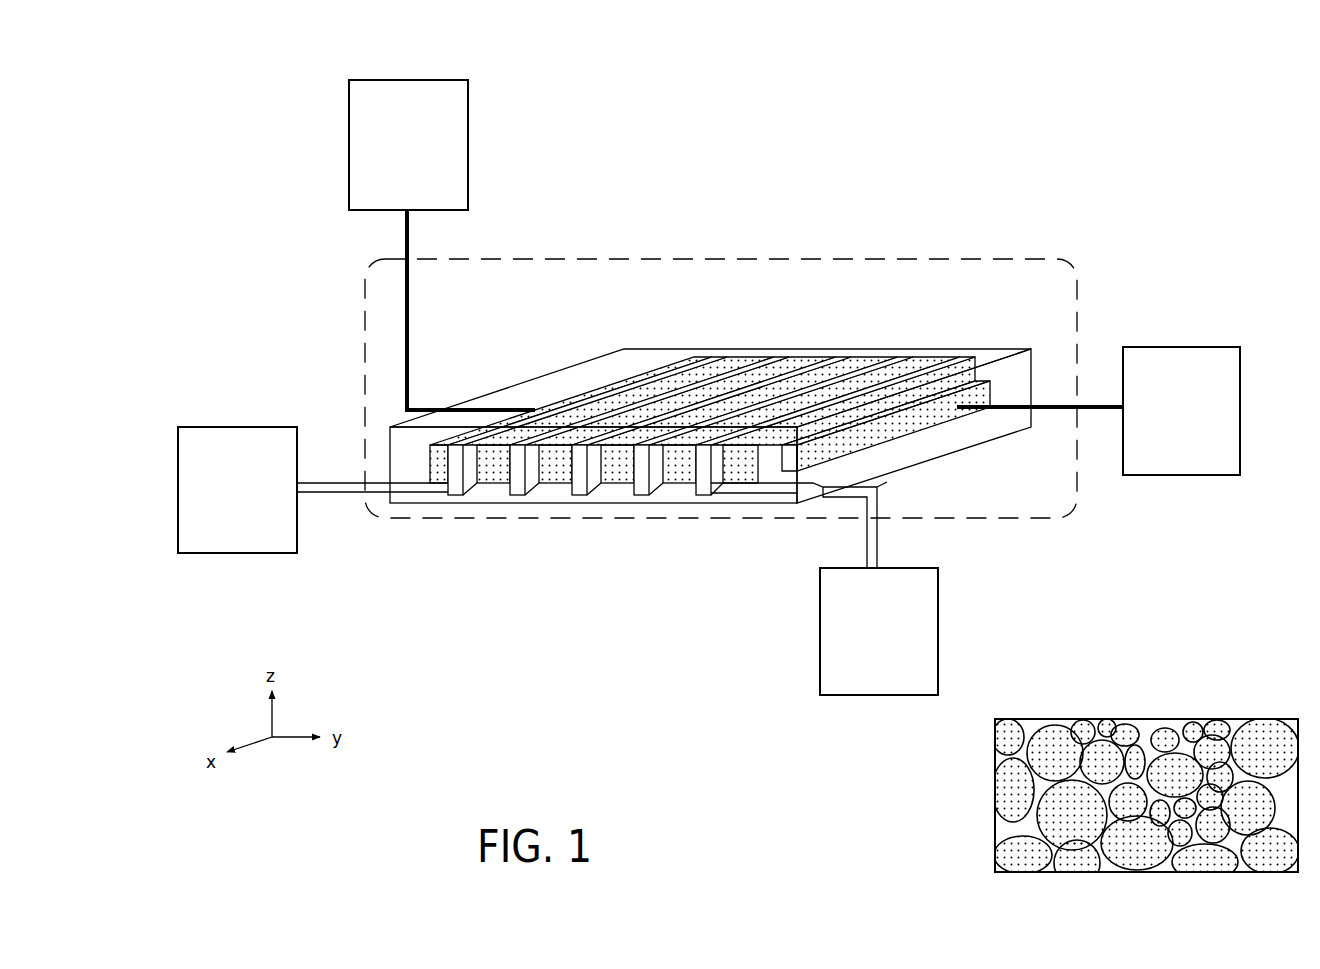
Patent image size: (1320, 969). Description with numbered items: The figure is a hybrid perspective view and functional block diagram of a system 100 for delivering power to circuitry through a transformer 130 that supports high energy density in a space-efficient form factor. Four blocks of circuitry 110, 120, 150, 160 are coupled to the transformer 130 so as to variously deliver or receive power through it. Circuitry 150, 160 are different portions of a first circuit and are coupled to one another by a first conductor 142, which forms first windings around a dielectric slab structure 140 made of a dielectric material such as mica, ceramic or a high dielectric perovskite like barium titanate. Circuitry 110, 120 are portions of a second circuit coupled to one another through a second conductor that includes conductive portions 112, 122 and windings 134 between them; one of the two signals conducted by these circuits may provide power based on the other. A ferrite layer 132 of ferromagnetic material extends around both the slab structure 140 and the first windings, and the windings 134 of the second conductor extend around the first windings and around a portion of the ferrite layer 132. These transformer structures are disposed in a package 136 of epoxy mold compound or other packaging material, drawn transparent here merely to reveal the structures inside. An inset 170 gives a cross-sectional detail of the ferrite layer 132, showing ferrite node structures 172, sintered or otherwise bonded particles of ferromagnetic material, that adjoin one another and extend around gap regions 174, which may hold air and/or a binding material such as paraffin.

The system 100 is at (228, 147).
The circuitry 110 is at (256, 515).
The conductive portion 112 is at (338, 502).
The circuitry 120 is at (898, 656).
The conductive portion 122 is at (862, 542).
The transformer 130 is at (962, 255).
The ferrite layer 132 is at (618, 470).
The windings 134 is at (848, 352).
The package 136 is at (666, 345).
The dielectric slab structure 140 is at (866, 440).
The first conductor 142 is at (414, 307).
The circuitry 150 is at (427, 169).
The circuitry 160 is at (1200, 434).
The inset 170 is at (1114, 777).
The ferrite node structures 172 is at (1114, 802).
The gap regions 174 is at (1208, 767).